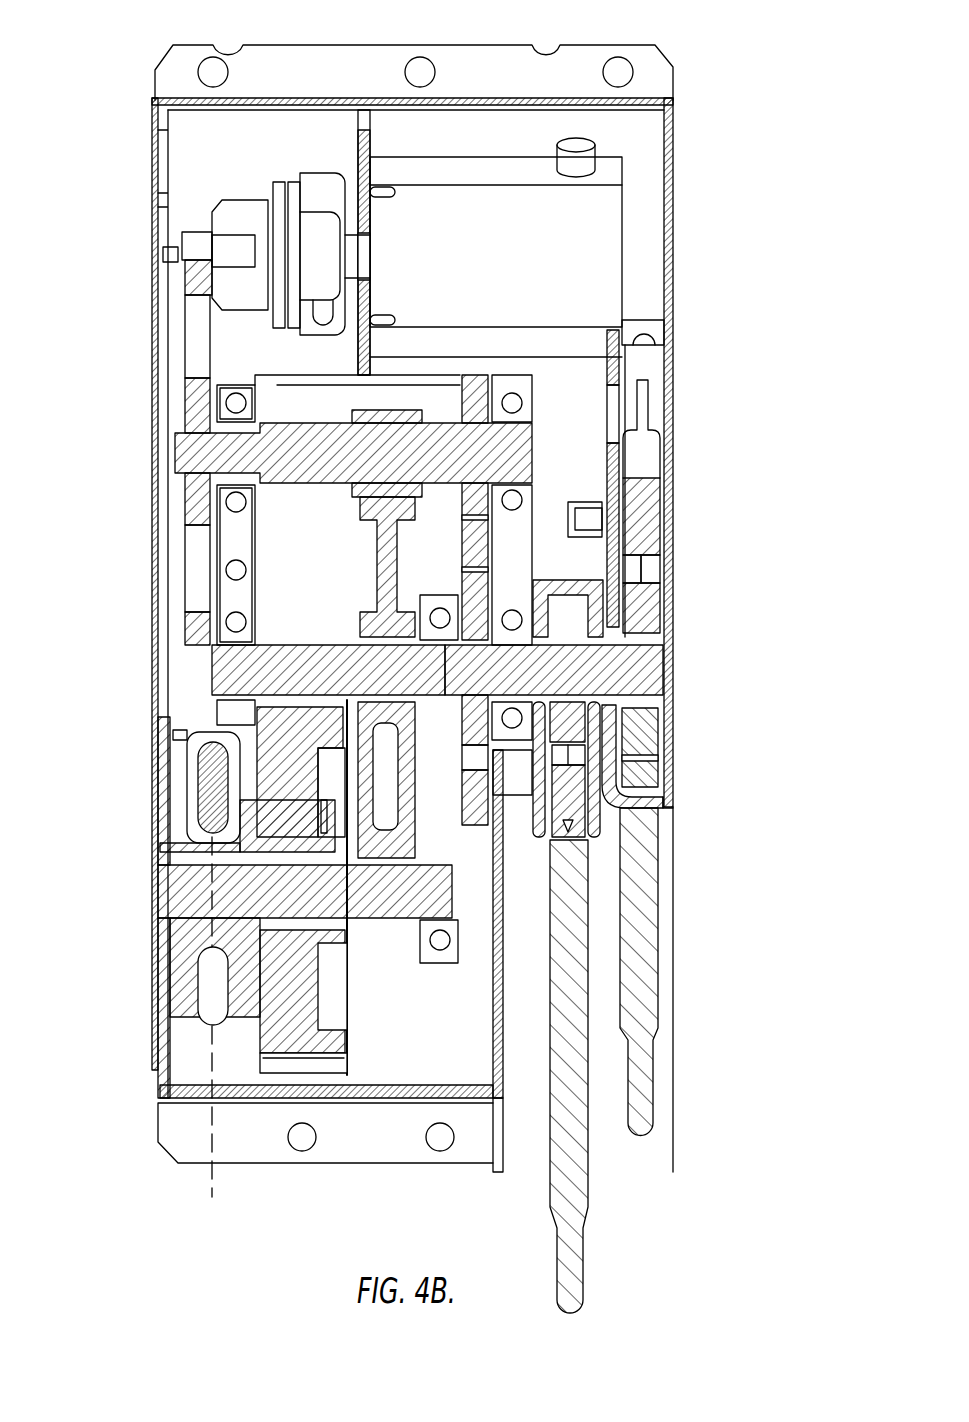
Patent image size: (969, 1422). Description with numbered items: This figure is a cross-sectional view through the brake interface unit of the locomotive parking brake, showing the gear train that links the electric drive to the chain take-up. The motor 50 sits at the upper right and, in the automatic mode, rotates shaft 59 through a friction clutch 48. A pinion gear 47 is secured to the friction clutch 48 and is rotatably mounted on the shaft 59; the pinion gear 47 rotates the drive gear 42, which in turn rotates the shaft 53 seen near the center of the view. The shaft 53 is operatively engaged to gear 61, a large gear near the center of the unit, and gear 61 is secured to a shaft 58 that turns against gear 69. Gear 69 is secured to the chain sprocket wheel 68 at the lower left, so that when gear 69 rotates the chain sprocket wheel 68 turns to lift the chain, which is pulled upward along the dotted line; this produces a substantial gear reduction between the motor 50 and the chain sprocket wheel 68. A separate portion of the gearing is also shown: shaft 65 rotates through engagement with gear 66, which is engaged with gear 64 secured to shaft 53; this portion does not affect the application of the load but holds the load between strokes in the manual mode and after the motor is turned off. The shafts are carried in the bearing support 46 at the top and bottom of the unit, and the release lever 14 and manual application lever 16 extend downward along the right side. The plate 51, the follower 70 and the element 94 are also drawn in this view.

The release lever 14 is at (648, 838).
The manual application lever 16 is at (575, 825).
The drive gear 42 is at (193, 350).
The bearing support 46 is at (557, 58).
The pinion gear 47 is at (242, 212).
The friction clutch 48 is at (318, 248).
The motor 50 is at (600, 222).
The base plate 51 is at (175, 893).
The shaft 53 is at (192, 453).
The shaft 58 is at (237, 668).
The shaft 59 is at (172, 257).
The gear 61 is at (362, 515).
The gear 64 is at (478, 385).
The shaft 65 is at (640, 657).
The gear 66 is at (485, 617).
The chain sprocket wheel 68 is at (240, 838).
The gear 69 is at (283, 755).
The cam follower 70 is at (185, 731).
The coupler 94 is at (578, 732).